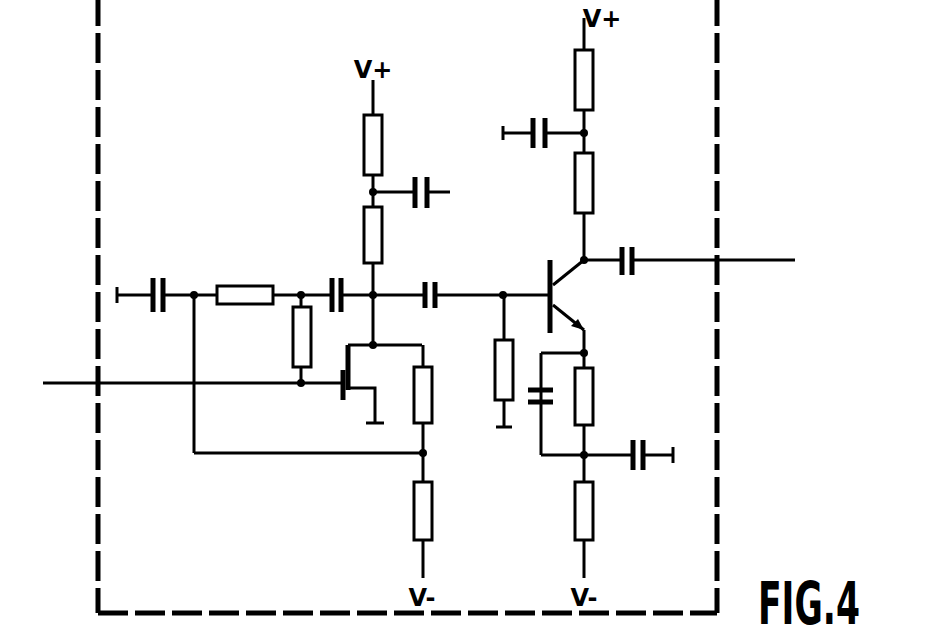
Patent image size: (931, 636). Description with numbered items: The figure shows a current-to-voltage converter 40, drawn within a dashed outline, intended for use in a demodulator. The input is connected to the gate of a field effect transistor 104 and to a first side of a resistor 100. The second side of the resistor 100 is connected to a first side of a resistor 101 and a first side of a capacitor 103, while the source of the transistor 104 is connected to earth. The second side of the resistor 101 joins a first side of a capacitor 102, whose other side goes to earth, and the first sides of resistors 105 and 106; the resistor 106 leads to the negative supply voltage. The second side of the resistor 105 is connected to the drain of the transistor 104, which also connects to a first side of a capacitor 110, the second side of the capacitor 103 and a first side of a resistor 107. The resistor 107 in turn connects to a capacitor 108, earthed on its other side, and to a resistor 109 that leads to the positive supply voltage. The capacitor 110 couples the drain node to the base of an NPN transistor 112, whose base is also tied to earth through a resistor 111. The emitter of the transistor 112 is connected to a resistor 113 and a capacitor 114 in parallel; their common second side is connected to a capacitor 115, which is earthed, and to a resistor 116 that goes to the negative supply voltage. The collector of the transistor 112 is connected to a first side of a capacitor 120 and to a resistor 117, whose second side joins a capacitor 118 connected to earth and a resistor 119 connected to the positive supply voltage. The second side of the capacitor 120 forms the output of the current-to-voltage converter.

The amplifier circuit 40 is at (721, 58).
The resistor 100 is at (293, 340).
The resistor 101 is at (237, 285).
The capacitor 102 is at (160, 274).
The capacitor 103 is at (337, 276).
The field effect transistor 104 is at (358, 366).
The resistor 105 is at (432, 399).
The resistor 106 is at (434, 512).
The resistor 107 is at (364, 235).
The capacitor 108 is at (422, 176).
The resistor 109 is at (364, 143).
The capacitor 110 is at (431, 281).
The resistor 111 is at (495, 372).
The NPN transistor 112 is at (560, 298).
The resistor 113 is at (596, 400).
The capacitor 114 is at (526, 396).
The capacitor 115 is at (637, 443).
The resistor 116 is at (594, 512).
The resistor 117 is at (594, 179).
The capacitor 118 is at (540, 117).
The resistor 119 is at (594, 80).
The capacitor 120 is at (628, 279).